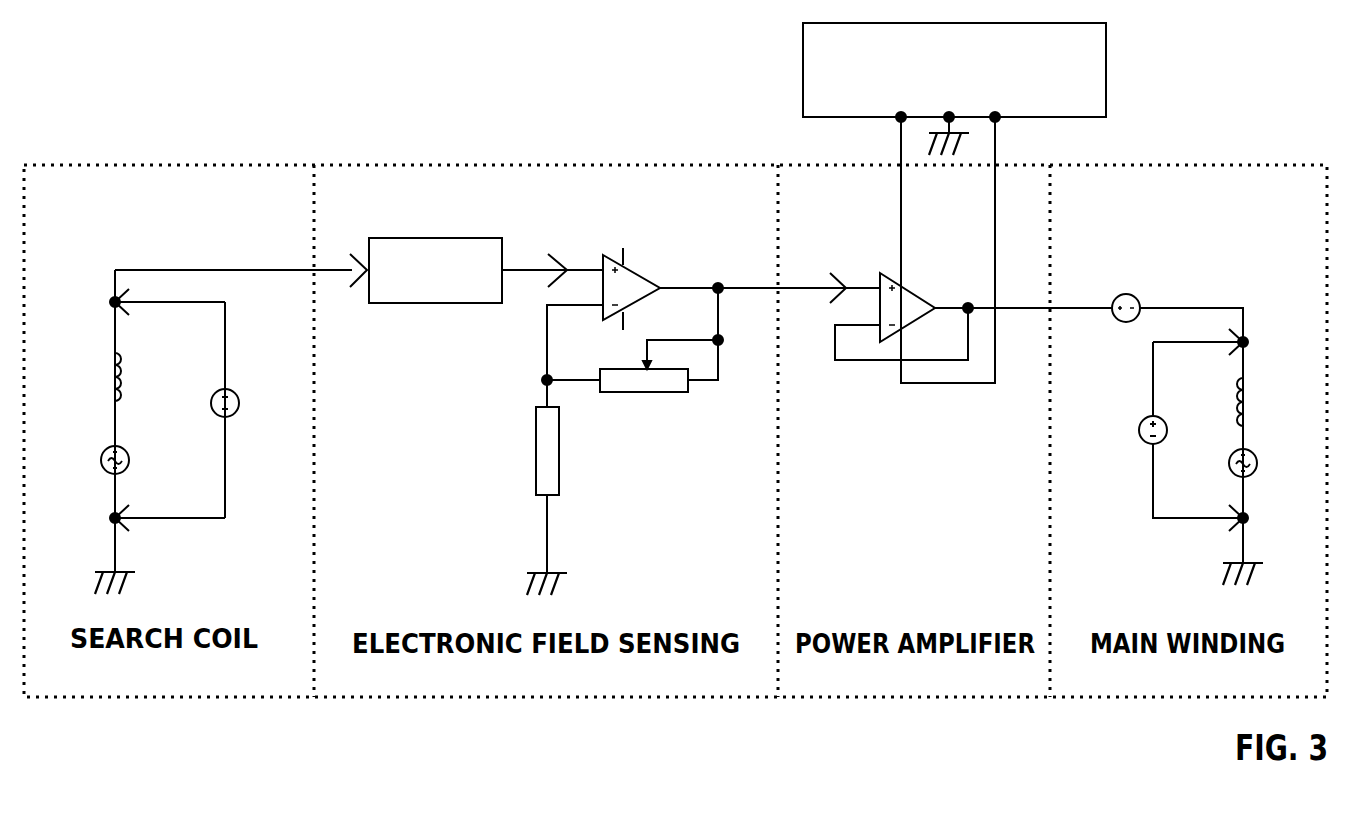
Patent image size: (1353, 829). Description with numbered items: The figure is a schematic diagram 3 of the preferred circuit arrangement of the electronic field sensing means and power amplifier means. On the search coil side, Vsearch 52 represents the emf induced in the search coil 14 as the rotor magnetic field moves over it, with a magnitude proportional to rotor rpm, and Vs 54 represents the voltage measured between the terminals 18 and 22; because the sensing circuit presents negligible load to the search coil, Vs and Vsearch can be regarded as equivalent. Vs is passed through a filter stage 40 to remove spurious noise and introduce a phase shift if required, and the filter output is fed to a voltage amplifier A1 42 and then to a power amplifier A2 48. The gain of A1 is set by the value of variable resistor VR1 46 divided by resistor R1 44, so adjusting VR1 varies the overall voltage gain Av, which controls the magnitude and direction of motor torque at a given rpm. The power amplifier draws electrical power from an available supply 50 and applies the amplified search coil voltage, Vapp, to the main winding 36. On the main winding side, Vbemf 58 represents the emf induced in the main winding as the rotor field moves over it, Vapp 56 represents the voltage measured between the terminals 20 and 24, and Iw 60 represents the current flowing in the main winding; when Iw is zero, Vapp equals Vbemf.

The schematic diagram 3 is at (272, 141).
The search coil 14 is at (93, 377).
The search coil terminal 18 is at (97, 303).
The search coil terminal 22 is at (98, 519).
The Vsearch 52 is at (94, 461).
The Vs 54 is at (218, 404).
The filter stage 40 is at (435, 270).
The voltage amplifier A1 42 is at (643, 288).
The resistor R1 44 is at (527, 451).
The variable resistor VR1 46 is at (644, 399).
The power amplifier A2 48 is at (921, 304).
The available supply 50 is at (954, 89).
The Iw 60 is at (1128, 296).
The main winding terminal 20 is at (1262, 343).
The main winding 36 is at (1265, 402).
The Vapp 56 is at (1148, 431).
The Vbemf 58 is at (1265, 464).
The main winding terminal 24 is at (1260, 519).